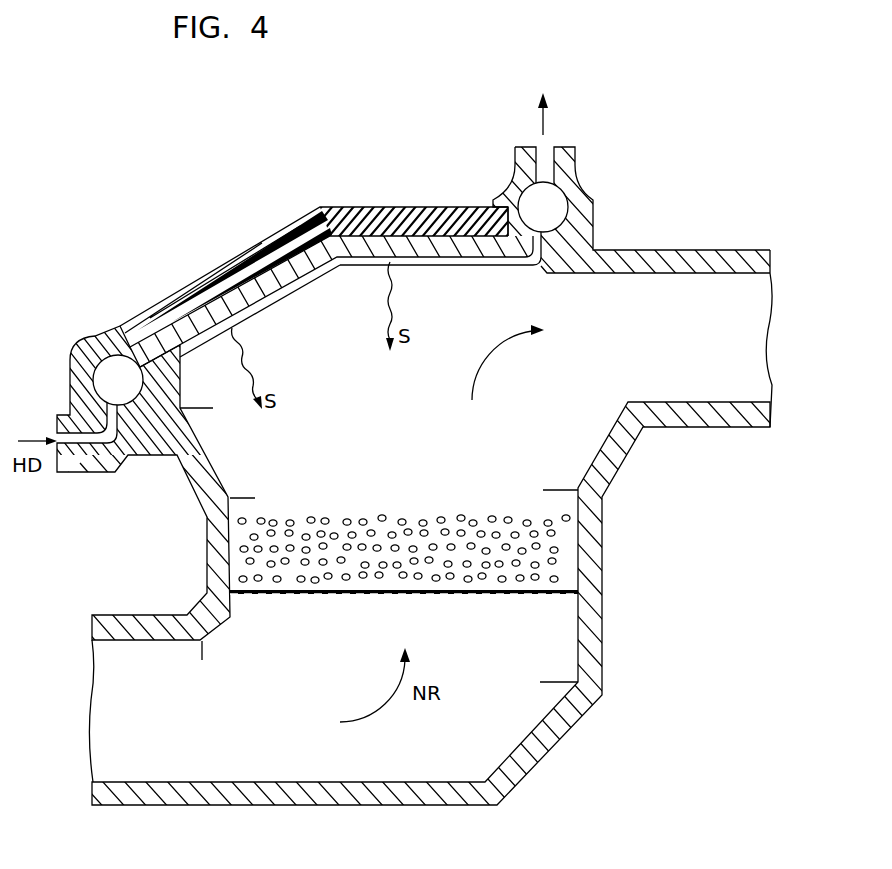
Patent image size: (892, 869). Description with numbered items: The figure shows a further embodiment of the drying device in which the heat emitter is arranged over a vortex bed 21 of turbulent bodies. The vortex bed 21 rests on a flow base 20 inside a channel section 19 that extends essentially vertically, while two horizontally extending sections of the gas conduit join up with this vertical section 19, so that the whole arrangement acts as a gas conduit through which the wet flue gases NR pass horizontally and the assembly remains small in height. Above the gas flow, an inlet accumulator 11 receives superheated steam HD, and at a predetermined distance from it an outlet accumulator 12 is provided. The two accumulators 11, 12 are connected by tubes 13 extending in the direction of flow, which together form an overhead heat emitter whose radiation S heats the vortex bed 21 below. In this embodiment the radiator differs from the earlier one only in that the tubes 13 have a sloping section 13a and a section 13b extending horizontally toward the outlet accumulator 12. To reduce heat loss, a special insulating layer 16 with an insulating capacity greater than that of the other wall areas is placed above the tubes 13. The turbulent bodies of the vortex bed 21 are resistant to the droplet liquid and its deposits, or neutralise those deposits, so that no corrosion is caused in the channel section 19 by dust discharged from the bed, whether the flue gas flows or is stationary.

The inlet accumulator 11 is at (99, 371).
The outlet accumulator 12 is at (560, 205).
The tubes 13 is at (248, 306).
The sloping section 13a is at (305, 276).
The horizontally extending section 13b is at (440, 259).
The insulating layer 16 is at (356, 213).
The channel section 19 is at (572, 572).
The flow base 20 is at (294, 594).
The vortex bed 21 is at (418, 520).